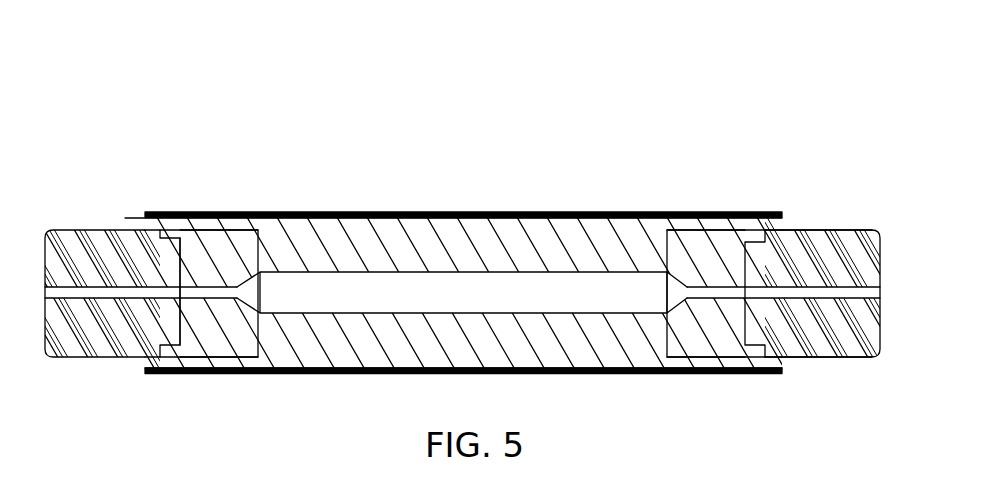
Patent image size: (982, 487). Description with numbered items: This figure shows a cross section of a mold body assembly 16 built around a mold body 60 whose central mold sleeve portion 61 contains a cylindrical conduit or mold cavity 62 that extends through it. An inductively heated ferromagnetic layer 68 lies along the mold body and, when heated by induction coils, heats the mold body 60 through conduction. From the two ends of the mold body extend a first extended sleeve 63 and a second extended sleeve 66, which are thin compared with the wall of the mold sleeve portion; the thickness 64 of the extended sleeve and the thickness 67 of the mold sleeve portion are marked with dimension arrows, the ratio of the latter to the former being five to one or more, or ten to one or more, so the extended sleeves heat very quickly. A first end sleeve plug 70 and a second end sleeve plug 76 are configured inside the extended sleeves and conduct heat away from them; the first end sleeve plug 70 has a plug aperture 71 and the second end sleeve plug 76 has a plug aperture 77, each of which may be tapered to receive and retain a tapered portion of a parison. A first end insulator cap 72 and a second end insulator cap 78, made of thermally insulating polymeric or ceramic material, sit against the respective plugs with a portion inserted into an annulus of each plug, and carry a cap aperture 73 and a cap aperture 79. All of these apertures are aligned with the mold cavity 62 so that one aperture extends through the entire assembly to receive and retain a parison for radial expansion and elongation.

The mold body assembly 16 is at (273, 88).
The mold body 60 is at (463, 245).
The mold sleeve portion 61 is at (547, 237).
The mold cavity 62 is at (510, 283).
The first extended sleeve 63 is at (175, 216).
The thickness of the extended sleeve 64 is at (128, 270).
The second extended sleeve 66 is at (725, 374).
The thickness of the mold sleeve portion 67 is at (427, 296).
The ferromagnetic layer 68 is at (356, 214).
The first end sleeve plug 70 is at (217, 277).
The plug aperture 71 is at (262, 277).
The first end insulator cap 72 is at (68, 272).
The cap aperture 73 is at (130, 257).
The second end sleeve plug 76 is at (682, 290).
The plug aperture 77 is at (725, 285).
The second end insulator cap 78 is at (805, 265).
The cap aperture 79 is at (858, 275).